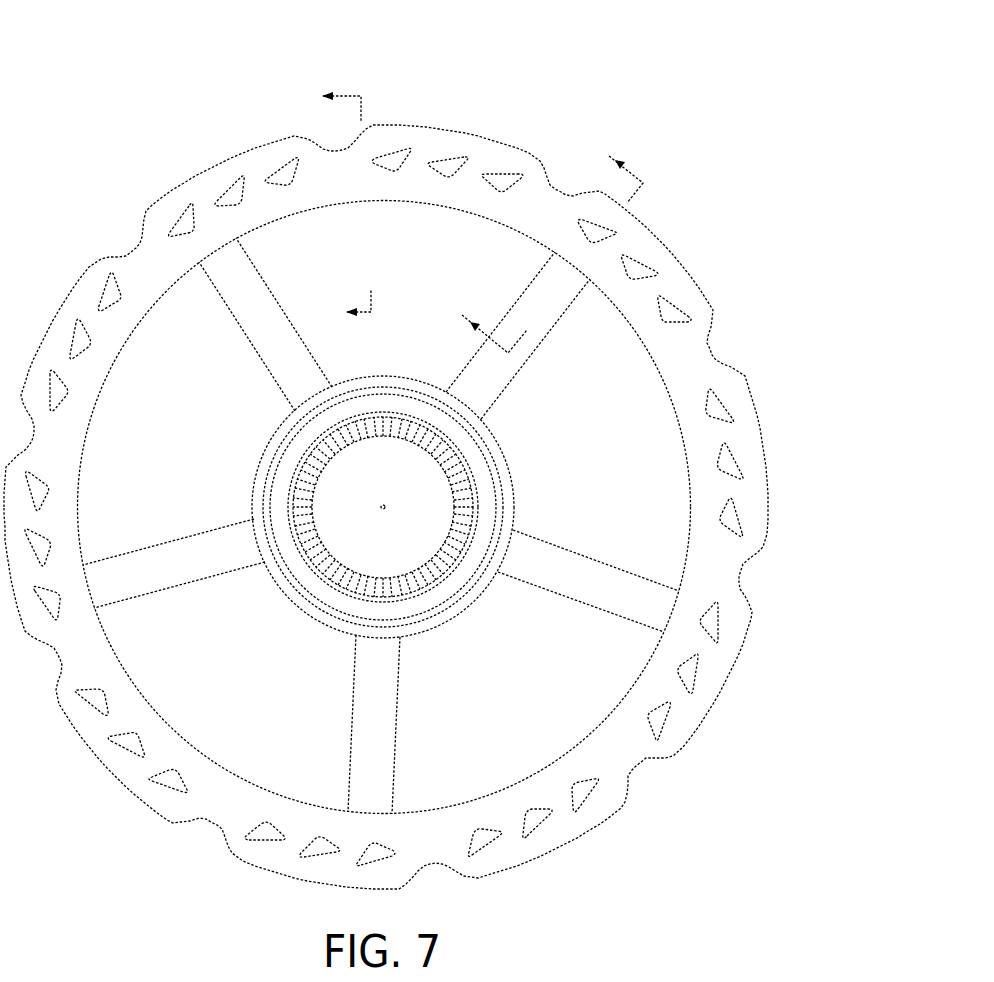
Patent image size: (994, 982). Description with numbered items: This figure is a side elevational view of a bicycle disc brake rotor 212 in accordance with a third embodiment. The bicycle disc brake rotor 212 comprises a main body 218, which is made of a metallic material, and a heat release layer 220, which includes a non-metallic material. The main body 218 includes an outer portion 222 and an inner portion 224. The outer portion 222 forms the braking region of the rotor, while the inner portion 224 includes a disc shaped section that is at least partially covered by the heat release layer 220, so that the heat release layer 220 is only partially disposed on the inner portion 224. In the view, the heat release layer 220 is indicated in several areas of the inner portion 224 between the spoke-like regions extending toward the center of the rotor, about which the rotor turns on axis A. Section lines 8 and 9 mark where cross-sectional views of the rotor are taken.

The bicycle disc brake rotor 212 is at (527, 63).
The main body 218 is at (228, 891).
The heat release layer 220 is at (520, 703).
The outer portion 222 is at (139, 810).
The inner portion 224 is at (218, 780).
The section line 8- 8 is at (333, 205).
The section line 9- 9 is at (542, 240).
The axis A is at (388, 502).